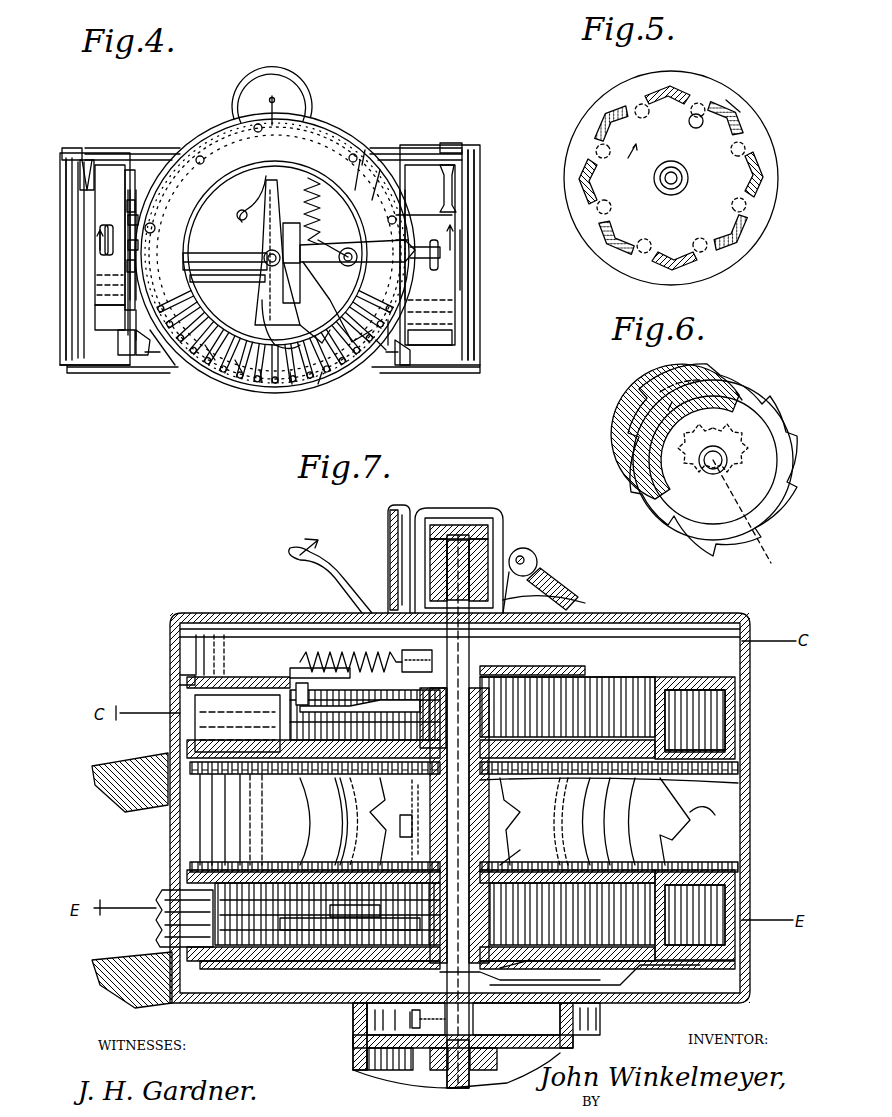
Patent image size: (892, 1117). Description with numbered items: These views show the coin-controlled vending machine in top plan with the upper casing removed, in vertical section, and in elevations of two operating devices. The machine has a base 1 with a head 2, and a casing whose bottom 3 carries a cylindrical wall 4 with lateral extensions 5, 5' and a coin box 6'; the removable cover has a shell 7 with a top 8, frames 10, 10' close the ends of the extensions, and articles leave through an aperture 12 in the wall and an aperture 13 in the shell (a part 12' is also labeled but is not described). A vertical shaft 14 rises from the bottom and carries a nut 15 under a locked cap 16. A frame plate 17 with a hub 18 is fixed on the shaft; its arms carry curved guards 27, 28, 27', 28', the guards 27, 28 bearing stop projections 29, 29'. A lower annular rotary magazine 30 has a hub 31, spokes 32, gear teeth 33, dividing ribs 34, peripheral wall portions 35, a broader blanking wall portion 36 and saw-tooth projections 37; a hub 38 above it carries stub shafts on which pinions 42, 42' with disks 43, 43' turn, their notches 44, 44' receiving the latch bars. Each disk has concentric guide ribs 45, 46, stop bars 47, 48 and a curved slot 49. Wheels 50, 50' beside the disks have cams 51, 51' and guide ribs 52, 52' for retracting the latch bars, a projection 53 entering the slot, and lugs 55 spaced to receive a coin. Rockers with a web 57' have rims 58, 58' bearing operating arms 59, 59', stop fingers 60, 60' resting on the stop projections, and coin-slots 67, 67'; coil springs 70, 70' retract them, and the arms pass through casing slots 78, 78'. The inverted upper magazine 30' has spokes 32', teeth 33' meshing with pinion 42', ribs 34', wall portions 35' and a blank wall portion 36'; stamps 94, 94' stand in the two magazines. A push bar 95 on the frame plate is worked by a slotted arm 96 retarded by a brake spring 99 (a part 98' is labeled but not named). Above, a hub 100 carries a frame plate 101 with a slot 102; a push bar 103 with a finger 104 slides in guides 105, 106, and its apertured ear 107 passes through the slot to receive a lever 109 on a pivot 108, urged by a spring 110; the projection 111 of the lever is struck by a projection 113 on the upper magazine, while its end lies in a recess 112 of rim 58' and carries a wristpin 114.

In FIG. 7, the base 1 is at (390, 1070).
In FIG. 7, the head 2 is at (405, 1070).
In FIG. 4, the bottom 3 is at (215, 350).
In FIG. 7, the bottom 3 is at (285, 970).
In FIG. 4, the cylindrical wall 4 is at (205, 135).
In FIG. 7, the cylindrical wall 4 is at (172, 843).
In FIG. 4, the lateral extension 5 is at (135, 369).
In FIG. 4, the lateral extension 5' is at (414, 368).
In FIG. 7, the lateral extension 5' is at (547, 589).
In FIG. 7, the cylindrical box 6' is at (603, 1019).
In FIG. 7, the cylindrical shell 7 is at (200, 640).
In FIG. 7, the top 8 is at (248, 622).
In FIG. 4, the frame 10 is at (83, 245).
In FIG. 7, the frame 10' is at (636, 785).
In FIG. 7, the aperture 12 is at (433, 873).
In FIG. 4, the wall 12' is at (498, 255).
In FIG. 7, the aperture 13 is at (172, 688).
In FIG. 4, the vertical shaft 14 is at (256, 272).
In FIG. 7, the vertical shaft 14 is at (462, 545).
In FIG. 7, the nut 15 is at (455, 540).
In FIG. 7, the cap 16 is at (490, 512).
In FIG. 4, the frame plate 17 is at (225, 200).
In FIG. 7, the frame plate 17 is at (335, 935).
In FIG. 7, the hub 18 is at (555, 1019).
In FIG. 4, the curved guard 27 is at (273, 130).
In FIG. 4, the curved guard 27' is at (167, 365).
In FIG. 4, the curved guard 28 is at (394, 137).
In FIG. 4, the curved guard 28' is at (379, 374).
In FIG. 4, the stop projection 29 is at (150, 389).
In FIG. 4, the stop projection 29' is at (398, 389).
In FIG. 7, the annular rotary magazine 30 is at (487, 987).
In FIG. 4, the magazine 30' is at (275, 260).
In FIG. 7, the magazine 30' is at (635, 746).
In FIG. 7, the hub 31 is at (428, 835).
In FIG. 7, the spokes 32 is at (521, 852).
In FIG. 4, the spokes 32' is at (260, 358).
In FIG. 7, the spokes 32' is at (578, 821).
In FIG. 7, the gear teeth 33 is at (688, 821).
In FIG. 7, the gear teeth 33' is at (365, 821).
In FIG. 7, the ribs 34 is at (486, 950).
In FIG. 4, the partitional ribs 34' is at (223, 397).
In FIG. 7, the partitional ribs 34' is at (460, 722).
In FIG. 7, the peripheral wall portions 35 is at (635, 914).
In FIG. 4, the peripheral wall portions 35' is at (192, 392).
In FIG. 7, the peripheral wall portions 35' is at (720, 718).
In FIG. 7, the wall portion 36 is at (595, 976).
In FIG. 4, the wall portion 36' is at (249, 405).
In FIG. 7, the wall portion 36' is at (567, 696).
In FIG. 4, the projections 37 is at (265, 337).
In FIG. 7, the projections 37 is at (650, 964).
In FIG. 7, the hub 38 is at (520, 800).
In FIG. 4, the pinion 42 is at (110, 373).
In FIG. 6, the pinion 42 is at (729, 500).
In FIG. 4, the pinion 42' is at (468, 332).
In FIG. 7, the pinion 42' is at (546, 821).
In FIG. 4, the disk 43 is at (121, 316).
In FIG. 6, the disk 43 is at (696, 460).
In FIG. 4, the disk 43' is at (419, 200).
In FIG. 7, the disk 43' is at (662, 821).
In FIG. 4, the notches 44 is at (129, 213).
In FIG. 6, the notches 44 is at (730, 474).
In FIG. 4, the notches 44' is at (423, 209).
In FIG. 7, the notches 44' is at (378, 823).
In FIG. 6, the guide rib 45 is at (665, 385).
In FIG. 6, the guide rib 46 is at (735, 415).
In FIG. 6, the stop bar 47 is at (737, 392).
In FIG. 6, the stop bar 48 is at (650, 472).
In FIG. 6, the curved slot 49 is at (663, 420).
In FIG. 5, the disk-like wheel 50 is at (671, 173).
In FIG. 7, the disk-like wheel 50' is at (490, 765).
In FIG. 4, the cam 51 is at (80, 312).
In FIG. 5, the cam 51 is at (742, 92).
In FIG. 4, the cam 51' is at (463, 207).
In FIG. 5, the guide rib 52 is at (671, 160).
In FIG. 7, the guide rib 52' is at (384, 820).
In FIG. 5, the projection 53 is at (689, 124).
In FIG. 5, the lugs 55 is at (735, 250).
In FIG. 7, the web 57' is at (284, 821).
In FIG. 4, the rim 58 is at (111, 376).
In FIG. 4, the rim 58' is at (450, 357).
In FIG. 7, the rim 58' is at (237, 820).
In FIG. 4, the operating arm 59 is at (120, 207).
In FIG. 4, the operating arm 59' is at (479, 184).
In FIG. 7, the operating arm 59' is at (306, 576).
In FIG. 4, the stop finger 60 is at (110, 381).
In FIG. 4, the stop finger 60' is at (415, 375).
In FIG. 4, the coin-slot 67 is at (72, 256).
In FIG. 4, the coin-slot 67' is at (491, 260).
In FIG. 4, the coil spring 70 is at (63, 260).
In FIG. 4, the coil spring 70' is at (493, 255).
In FIG. 4, the slot 78 is at (83, 153).
In FIG. 4, the slot 78' is at (445, 238).
In FIG. 7, the stamps 94 is at (152, 949).
In FIG. 4, the stamps 94' is at (256, 96).
In FIG. 7, the stamps 94' is at (130, 772).
In FIG. 7, the push bar 95 is at (300, 950).
In FIG. 7, the slotted arm 96 is at (330, 950).
In FIG. 7, the plate 98' is at (487, 977).
In FIG. 4, the brake spring 99 is at (262, 185).
In FIG. 7, the hub 100 is at (380, 705).
In FIG. 4, the horizontal frame plate 101 is at (362, 150).
In FIG. 7, the horizontal frame plate 101 is at (560, 668).
In FIG. 4, the slot 102 is at (286, 290).
In FIG. 4, the push bar 103 is at (300, 392).
In FIG. 7, the push bar 103 is at (296, 672).
In FIG. 7, the projecting finger 104 is at (200, 703).
In FIG. 7, the guide 105 is at (320, 730).
In FIG. 7, the guide 106 is at (296, 690).
In FIG. 4, the apertured ear 107 is at (268, 240).
In FIG. 7, the apertured ear 107 is at (416, 672).
In FIG. 4, the pivot 108 is at (322, 226).
In FIG. 4, the lever 109 is at (322, 265).
In FIG. 7, the lever 109 is at (410, 655).
In FIG. 4, the spring 110 is at (385, 165).
In FIG. 7, the spring 110 is at (318, 655).
In FIG. 4, the projection 111 is at (380, 263).
In FIG. 4, the recess 112 is at (415, 255).
In FIG. 4, the projection 113 is at (135, 222).
In FIG. 4, the vertical wristpin 114 is at (430, 262).